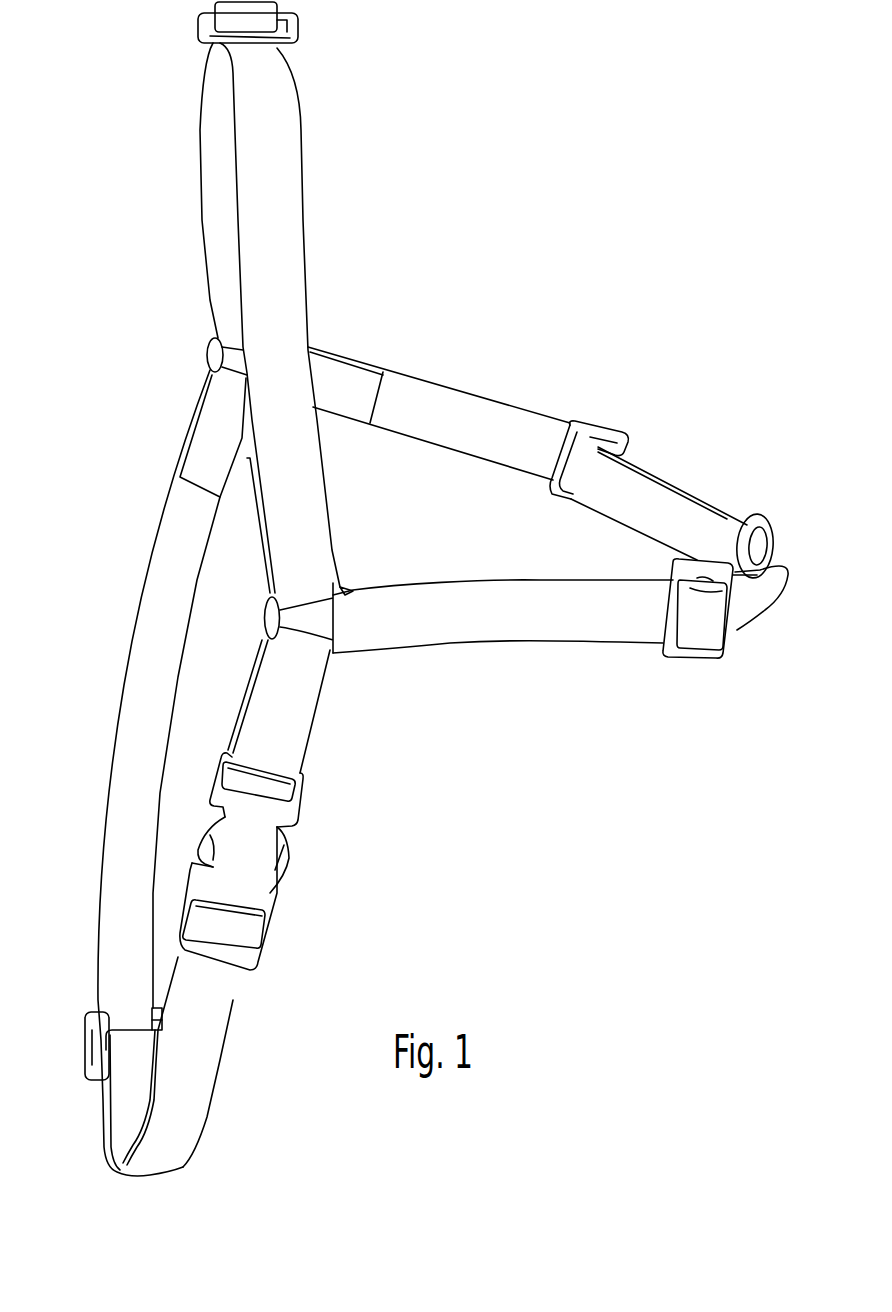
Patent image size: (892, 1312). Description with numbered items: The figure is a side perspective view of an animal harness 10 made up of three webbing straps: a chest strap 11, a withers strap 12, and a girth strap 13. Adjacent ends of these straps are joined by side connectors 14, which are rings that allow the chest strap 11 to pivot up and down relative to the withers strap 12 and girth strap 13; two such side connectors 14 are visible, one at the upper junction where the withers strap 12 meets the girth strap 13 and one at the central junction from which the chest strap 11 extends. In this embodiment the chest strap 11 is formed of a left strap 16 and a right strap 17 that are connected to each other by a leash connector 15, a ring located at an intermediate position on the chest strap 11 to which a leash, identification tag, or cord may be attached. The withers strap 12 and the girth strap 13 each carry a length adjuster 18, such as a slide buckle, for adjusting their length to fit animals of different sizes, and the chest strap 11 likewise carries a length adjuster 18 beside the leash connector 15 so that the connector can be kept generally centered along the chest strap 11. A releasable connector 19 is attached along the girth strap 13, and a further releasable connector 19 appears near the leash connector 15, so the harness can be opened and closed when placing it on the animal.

The animal harness 10 is at (382, 287).
The chest strap 11 is at (677, 490).
The withers strap 12 is at (299, 188).
The girth strap 13 is at (122, 700).
The side connector 14 is at (208, 353).
The leash connector 15 is at (767, 523).
The left strap 16 is at (473, 407).
The right strap 17 is at (497, 585).
The length adjuster 18 is at (287, 27).
The releasable connector 19 is at (288, 860).